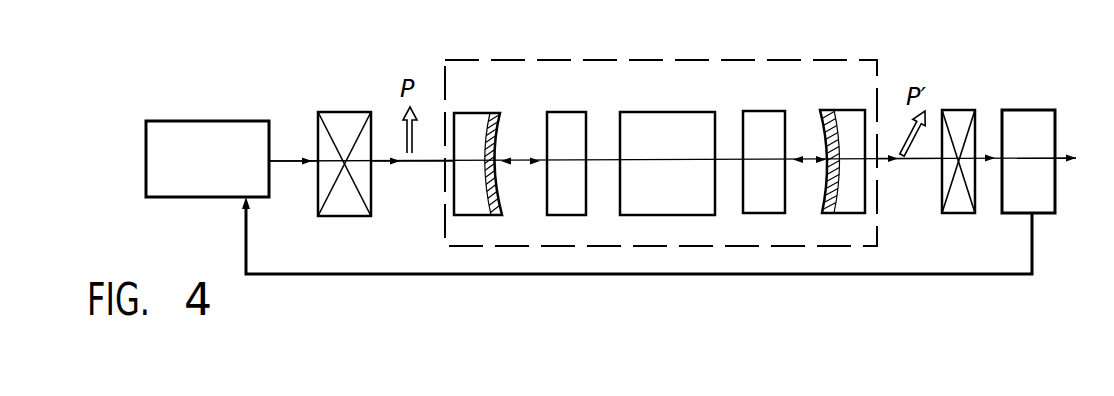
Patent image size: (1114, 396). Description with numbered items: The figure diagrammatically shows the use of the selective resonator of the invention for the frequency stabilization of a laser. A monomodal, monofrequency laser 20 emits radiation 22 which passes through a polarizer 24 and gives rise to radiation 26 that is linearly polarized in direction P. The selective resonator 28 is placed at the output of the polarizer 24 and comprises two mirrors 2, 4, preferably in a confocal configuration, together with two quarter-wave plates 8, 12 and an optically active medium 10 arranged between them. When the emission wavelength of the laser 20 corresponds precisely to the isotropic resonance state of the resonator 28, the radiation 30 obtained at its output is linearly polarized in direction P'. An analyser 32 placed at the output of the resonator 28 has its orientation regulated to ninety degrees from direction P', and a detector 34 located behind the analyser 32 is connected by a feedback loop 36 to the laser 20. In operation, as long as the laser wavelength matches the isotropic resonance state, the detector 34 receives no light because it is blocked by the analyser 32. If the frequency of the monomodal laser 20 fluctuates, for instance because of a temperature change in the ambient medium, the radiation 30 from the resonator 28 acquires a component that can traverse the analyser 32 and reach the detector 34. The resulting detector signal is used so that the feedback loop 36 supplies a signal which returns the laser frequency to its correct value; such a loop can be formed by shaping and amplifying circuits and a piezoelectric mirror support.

The mirror 2 is at (465, 127).
The mirror 4 is at (852, 130).
The quarter-wave plate 8 is at (567, 118).
The optically active medium 10 is at (667, 178).
The quarter-wave plate 12 is at (757, 113).
The monomodal laser 20 is at (175, 132).
The radiation 22 is at (287, 160).
The polarizer 24 is at (340, 197).
The polarized radiation 26 is at (427, 161).
The selective resonator 28 is at (580, 247).
The output radiation 30 is at (925, 160).
The analyser 32 is at (957, 120).
The detector 34 is at (1038, 122).
The feedback loop 36 is at (803, 274).